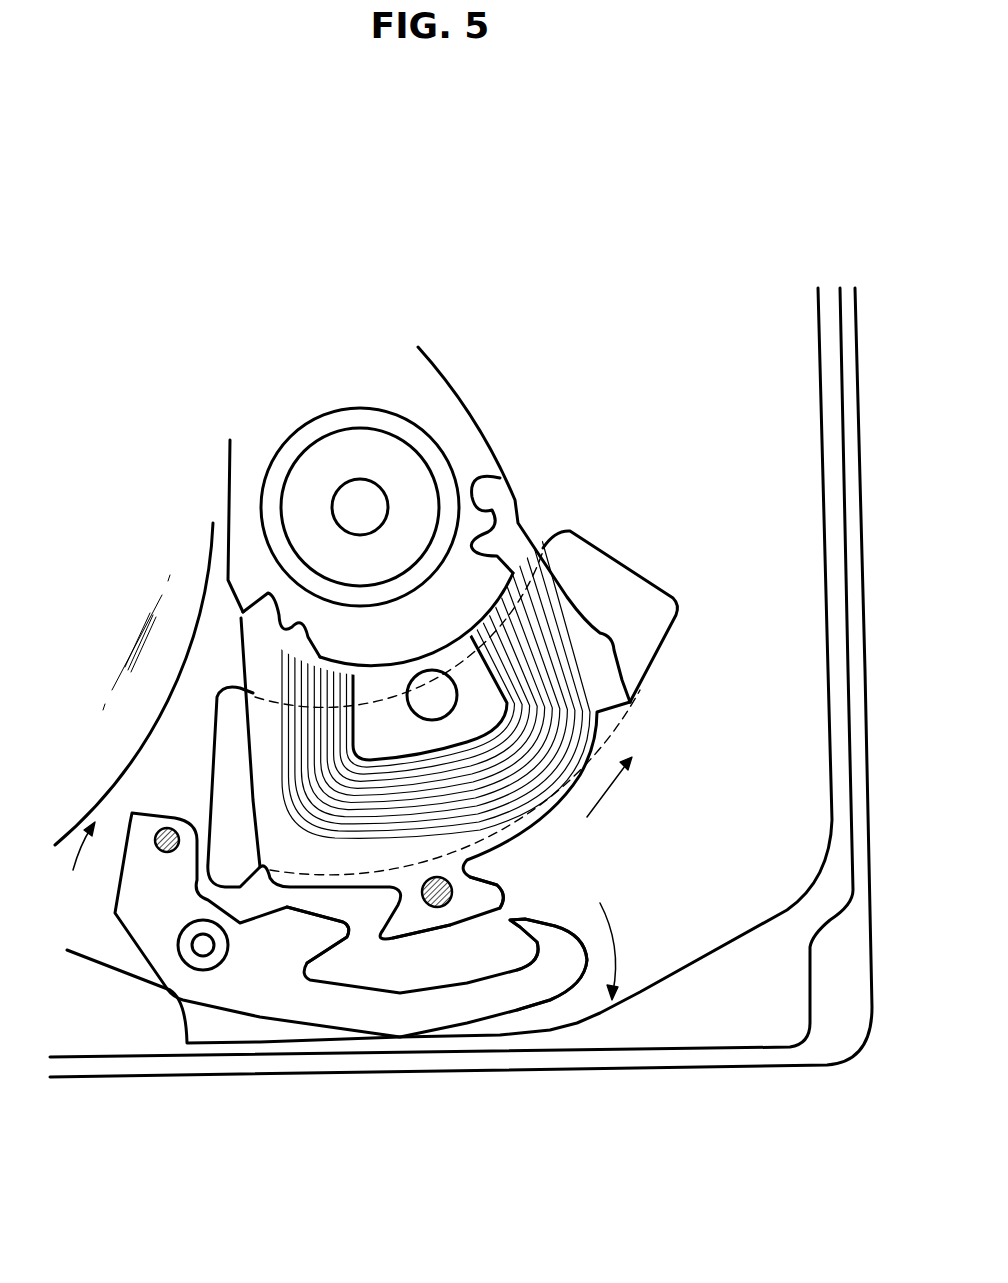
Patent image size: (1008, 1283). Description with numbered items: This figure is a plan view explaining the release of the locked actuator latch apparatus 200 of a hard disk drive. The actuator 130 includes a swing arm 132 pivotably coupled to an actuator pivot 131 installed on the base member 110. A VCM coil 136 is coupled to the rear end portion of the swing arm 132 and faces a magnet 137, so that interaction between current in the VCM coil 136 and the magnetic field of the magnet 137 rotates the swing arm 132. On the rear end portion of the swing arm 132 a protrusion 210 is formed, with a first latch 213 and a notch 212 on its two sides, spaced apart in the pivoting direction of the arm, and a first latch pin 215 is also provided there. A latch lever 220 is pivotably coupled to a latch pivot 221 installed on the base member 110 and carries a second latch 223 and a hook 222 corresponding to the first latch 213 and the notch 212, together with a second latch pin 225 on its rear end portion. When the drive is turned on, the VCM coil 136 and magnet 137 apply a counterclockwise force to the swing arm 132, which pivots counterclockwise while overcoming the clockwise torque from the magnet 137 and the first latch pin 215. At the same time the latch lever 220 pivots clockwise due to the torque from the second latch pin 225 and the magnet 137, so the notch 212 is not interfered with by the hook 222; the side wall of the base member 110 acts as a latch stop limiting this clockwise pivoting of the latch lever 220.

The base member 110 is at (102, 1073).
The actuator latch apparatus 200 is at (373, 1062).
The actuator 130 is at (466, 365).
The actuator pivot 131 is at (345, 503).
The swing arm 132 is at (497, 492).
The VCM coil 136 is at (573, 705).
The magnet 137 is at (621, 565).
The protrusion 210 is at (443, 930).
The notch 212 is at (500, 890).
The first latch 213 is at (398, 927).
The first latch pin 215 is at (452, 895).
The latch lever 220 is at (328, 1015).
The latch pivot 221 is at (203, 948).
The hook 222 is at (528, 935).
The second latch 223 is at (303, 927).
The second latch pin 225 is at (167, 828).